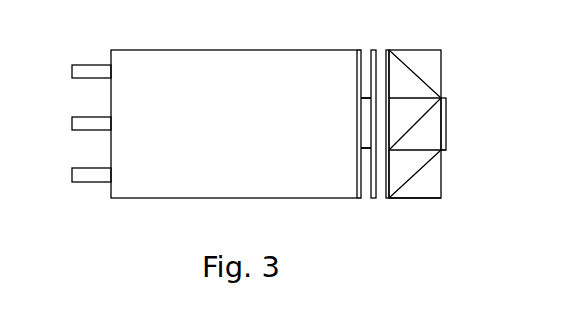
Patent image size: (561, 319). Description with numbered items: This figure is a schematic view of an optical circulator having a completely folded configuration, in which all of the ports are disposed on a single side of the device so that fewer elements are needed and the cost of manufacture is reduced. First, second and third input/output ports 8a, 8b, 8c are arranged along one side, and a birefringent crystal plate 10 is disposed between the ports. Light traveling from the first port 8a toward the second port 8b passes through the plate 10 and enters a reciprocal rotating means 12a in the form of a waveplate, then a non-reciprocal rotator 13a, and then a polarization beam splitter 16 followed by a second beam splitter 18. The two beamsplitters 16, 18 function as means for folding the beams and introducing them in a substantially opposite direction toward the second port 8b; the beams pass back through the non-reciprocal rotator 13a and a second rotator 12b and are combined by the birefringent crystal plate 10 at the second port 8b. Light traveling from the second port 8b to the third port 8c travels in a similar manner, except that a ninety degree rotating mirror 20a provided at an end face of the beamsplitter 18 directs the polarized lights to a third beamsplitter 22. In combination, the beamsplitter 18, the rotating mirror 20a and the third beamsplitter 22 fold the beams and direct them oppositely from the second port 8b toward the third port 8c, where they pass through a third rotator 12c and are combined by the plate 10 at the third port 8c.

The first input/output port 8a is at (84, 65).
The second input/output port 8b is at (78, 117).
The third input/output port 8c is at (92, 168).
The birefringent crystal plate 10 is at (230, 50).
The reciprocal rotating means 12a is at (359, 50).
The second rotator 12b is at (367, 124).
The third rotator 12c is at (361, 198).
The non-reciprocal rotator 13a is at (388, 198).
The polarization beam splitter 16 is at (416, 50).
The second beam splitter 18 is at (446, 152).
The 90 degree rotating mirror 20a is at (446, 100).
The third beamsplitter 22 is at (441, 198).